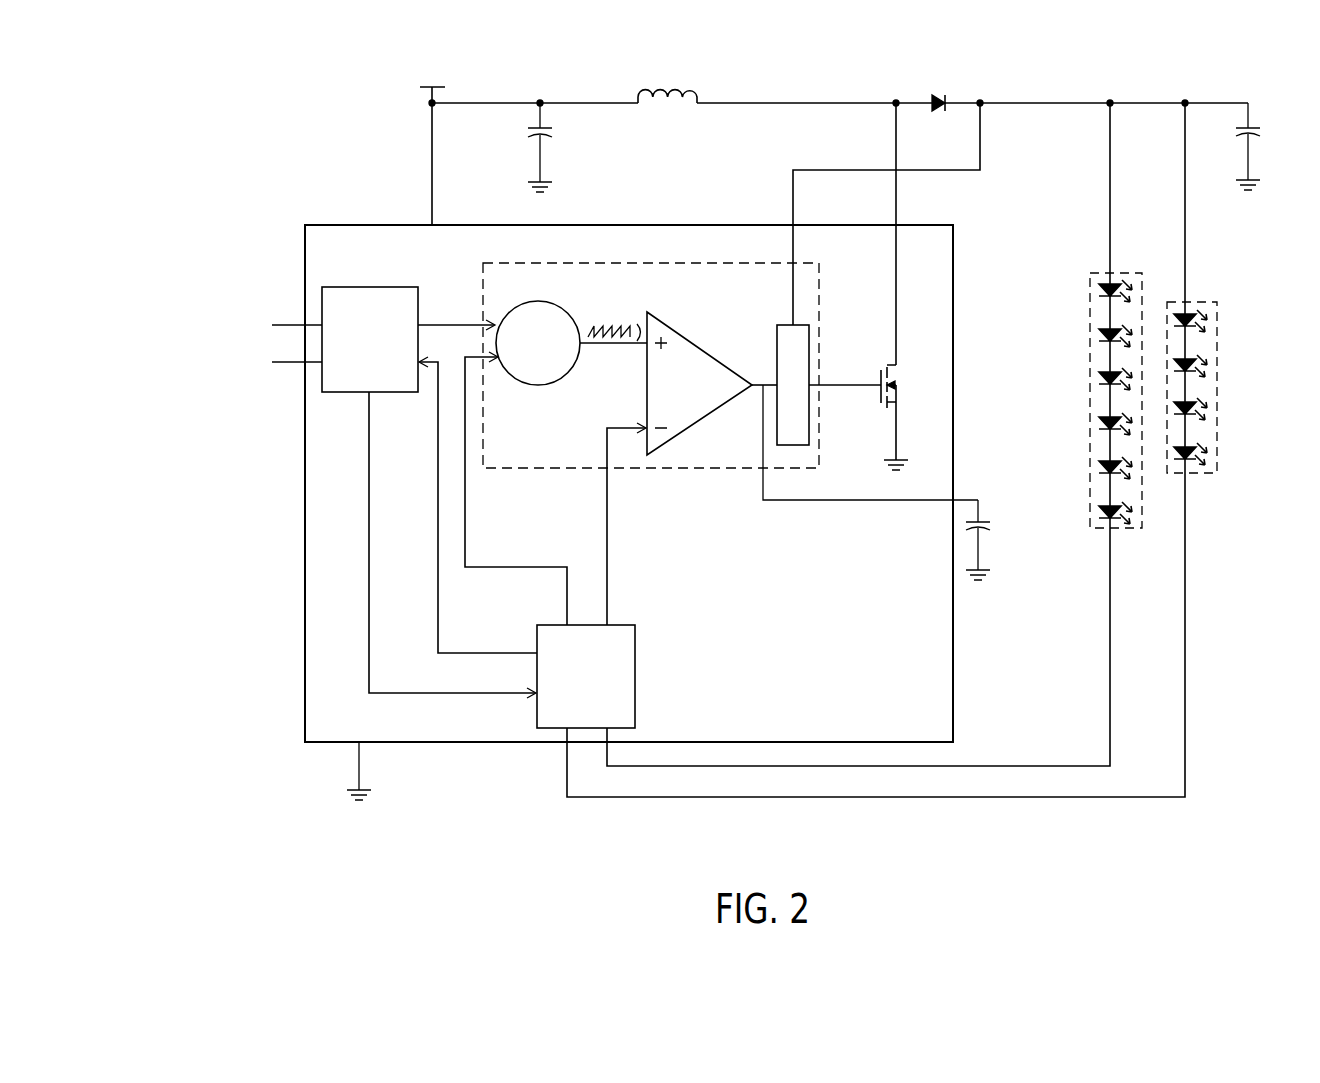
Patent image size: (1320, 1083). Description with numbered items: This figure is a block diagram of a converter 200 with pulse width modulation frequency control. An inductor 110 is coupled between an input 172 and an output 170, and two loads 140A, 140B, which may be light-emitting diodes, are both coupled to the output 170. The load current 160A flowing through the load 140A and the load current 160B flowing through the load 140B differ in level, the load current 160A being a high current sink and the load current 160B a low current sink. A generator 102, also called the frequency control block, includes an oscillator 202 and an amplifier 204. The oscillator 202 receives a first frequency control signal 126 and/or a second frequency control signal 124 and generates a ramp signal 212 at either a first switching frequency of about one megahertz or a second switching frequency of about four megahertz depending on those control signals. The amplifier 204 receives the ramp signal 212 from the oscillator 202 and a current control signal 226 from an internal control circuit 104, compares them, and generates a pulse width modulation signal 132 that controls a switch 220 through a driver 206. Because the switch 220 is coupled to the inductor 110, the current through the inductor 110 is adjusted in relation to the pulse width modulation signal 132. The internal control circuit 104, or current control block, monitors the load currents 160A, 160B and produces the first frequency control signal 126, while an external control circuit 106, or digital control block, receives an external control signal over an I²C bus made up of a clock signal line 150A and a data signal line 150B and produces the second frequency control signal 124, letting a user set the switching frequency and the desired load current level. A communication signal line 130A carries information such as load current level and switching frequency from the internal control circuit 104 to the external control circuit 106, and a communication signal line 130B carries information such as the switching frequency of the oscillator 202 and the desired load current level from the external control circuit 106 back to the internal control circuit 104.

The converter 200 is at (238, 92).
The input 172 is at (436, 102).
The inductor 110 is at (676, 88).
The output 170 is at (1108, 100).
The generator 102 is at (575, 263).
The oscillator 202 is at (524, 301).
The ramp signal 212 is at (613, 319).
The amplifier 204 is at (683, 333).
The driver 206 is at (786, 322).
The pulse width modulation signal 132 is at (824, 384).
The switch 220 is at (895, 383).
The external control circuit 106 is at (370, 339).
The internal control circuit 104 is at (586, 676).
The second frequency control signal 124 is at (426, 322).
The first frequency control signal 126 is at (467, 530).
The current control signal 226 is at (609, 530).
The communication signal line 130A is at (441, 620).
The communication signal line 130B is at (377, 690).
The clock signal line 150A is at (288, 321).
The data signal line 150B is at (288, 358).
The load current 160A is at (1010, 765).
The load current 160B is at (1187, 758).
The load 140A is at (1090, 500).
The load 140B is at (1217, 450).